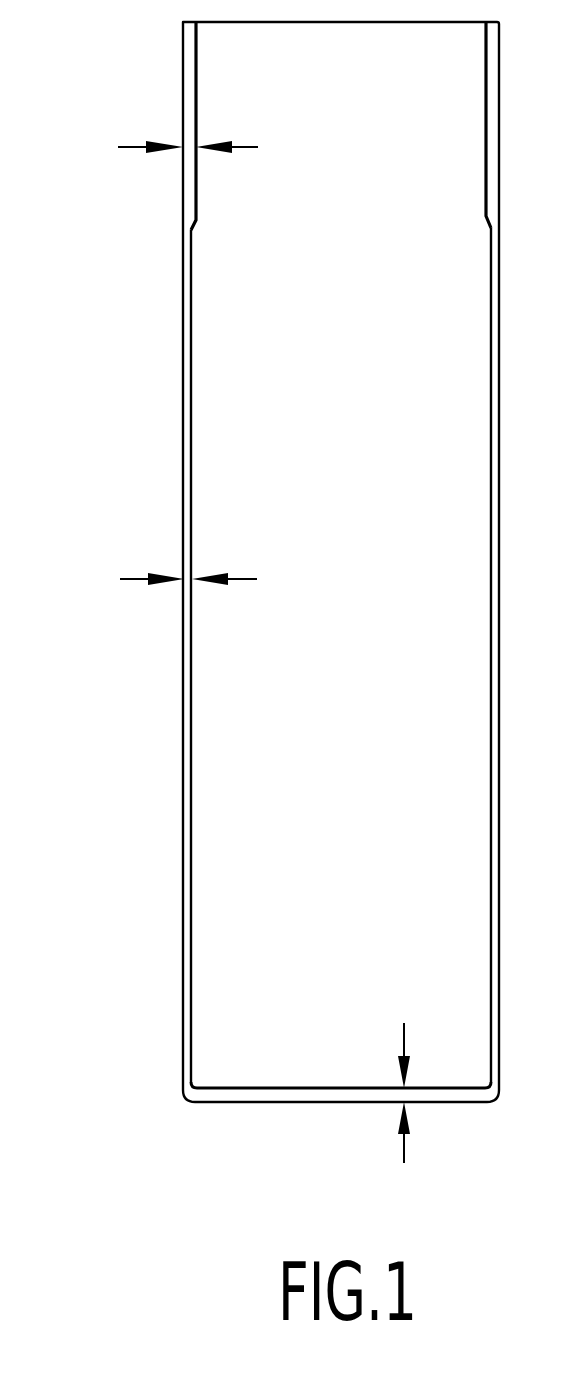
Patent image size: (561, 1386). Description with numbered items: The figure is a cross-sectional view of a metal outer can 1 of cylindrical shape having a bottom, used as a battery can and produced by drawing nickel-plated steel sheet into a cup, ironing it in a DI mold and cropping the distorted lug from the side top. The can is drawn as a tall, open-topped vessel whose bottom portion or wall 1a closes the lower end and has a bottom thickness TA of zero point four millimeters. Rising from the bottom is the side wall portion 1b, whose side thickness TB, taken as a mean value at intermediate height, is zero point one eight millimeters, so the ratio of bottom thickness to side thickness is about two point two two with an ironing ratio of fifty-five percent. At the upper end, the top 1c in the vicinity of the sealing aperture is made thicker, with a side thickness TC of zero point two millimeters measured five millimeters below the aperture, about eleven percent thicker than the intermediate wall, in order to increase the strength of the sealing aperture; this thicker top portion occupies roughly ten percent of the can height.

The metal outer can 1 is at (142, 929).
The bottom portion 1a is at (267, 1103).
The side wall portion 1b is at (184, 690).
The top 1c is at (183, 73).
The bottom thickness TA is at (404, 1088).
The side thickness TB is at (189, 578).
The side thickness in the vicinity of the sealing aperture TC is at (193, 146).